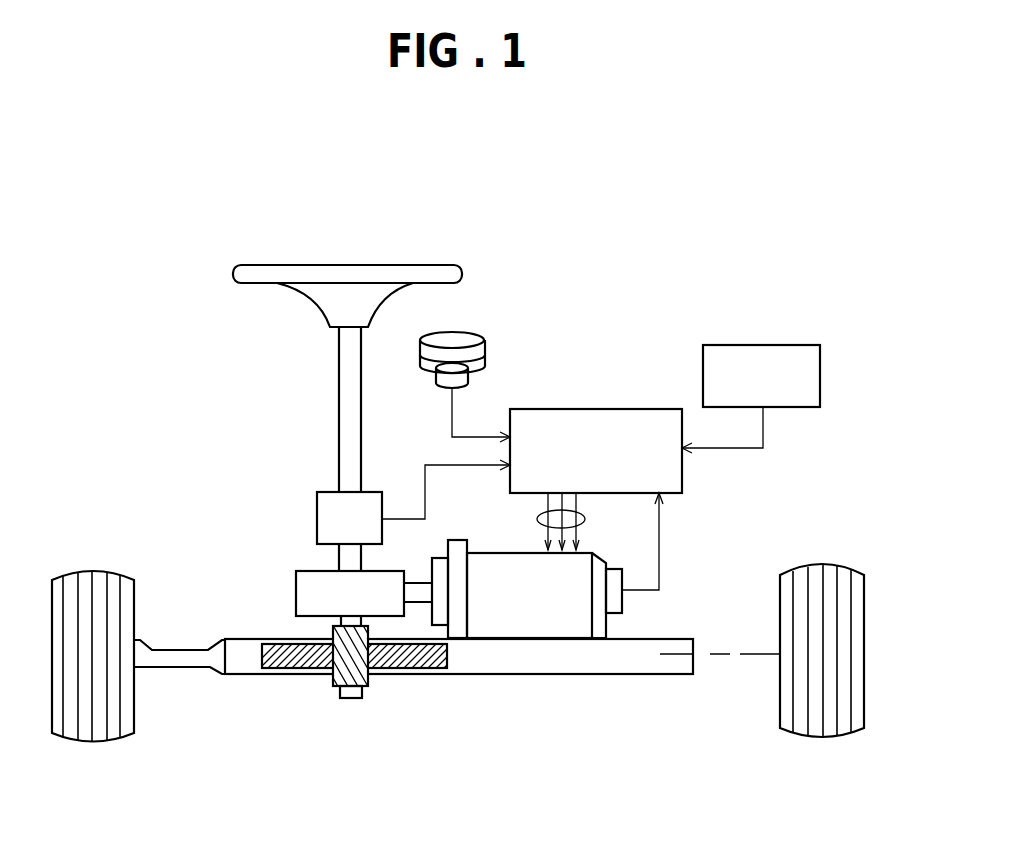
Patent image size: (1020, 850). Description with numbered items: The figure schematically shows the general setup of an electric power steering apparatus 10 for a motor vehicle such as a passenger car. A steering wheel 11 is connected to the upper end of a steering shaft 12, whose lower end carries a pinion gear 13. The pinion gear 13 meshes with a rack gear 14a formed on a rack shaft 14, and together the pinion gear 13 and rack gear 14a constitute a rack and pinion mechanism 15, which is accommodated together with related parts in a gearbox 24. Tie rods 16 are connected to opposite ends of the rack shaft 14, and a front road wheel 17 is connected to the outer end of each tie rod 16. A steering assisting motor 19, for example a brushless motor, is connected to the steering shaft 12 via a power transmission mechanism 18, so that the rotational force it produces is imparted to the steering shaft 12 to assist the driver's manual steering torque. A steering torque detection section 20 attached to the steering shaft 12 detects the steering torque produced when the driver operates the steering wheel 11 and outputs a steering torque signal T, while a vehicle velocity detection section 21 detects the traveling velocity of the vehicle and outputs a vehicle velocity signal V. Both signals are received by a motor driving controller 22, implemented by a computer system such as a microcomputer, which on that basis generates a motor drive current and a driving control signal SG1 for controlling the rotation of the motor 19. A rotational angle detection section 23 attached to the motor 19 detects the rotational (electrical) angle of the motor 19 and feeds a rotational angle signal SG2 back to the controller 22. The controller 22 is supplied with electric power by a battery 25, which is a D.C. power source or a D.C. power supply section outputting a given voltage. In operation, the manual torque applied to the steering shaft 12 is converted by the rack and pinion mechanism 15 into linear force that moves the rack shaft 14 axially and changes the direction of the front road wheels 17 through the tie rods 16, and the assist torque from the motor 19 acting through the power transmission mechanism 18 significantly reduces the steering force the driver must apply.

The electric power steering apparatus 10 is at (238, 232).
The steering wheel 11 is at (355, 268).
The steering shaft 12 is at (335, 355).
The pinion gear 13 is at (363, 685).
The rack shaft 14 is at (602, 653).
The rack gear 14a is at (283, 660).
The rack and pinion mechanism 15 is at (502, 735).
The tie rods 16 is at (167, 667).
The front road wheel 17 is at (95, 747).
The power transmission mechanism 18 is at (297, 585).
The steering assisting motor 19 is at (530, 612).
The steering torque detection section 20 is at (317, 503).
The vehicle velocity detection section 21 is at (483, 340).
The motor driving controller 22 is at (600, 409).
The rotational angle detection section 23 is at (622, 604).
The gearbox 24 is at (363, 701).
The battery 25 is at (763, 345).
The steering torque signal T is at (410, 517).
The vehicle velocity signal V is at (452, 408).
The driving control signal SG1 is at (537, 520).
The rotational angle signal SG2 is at (659, 530).